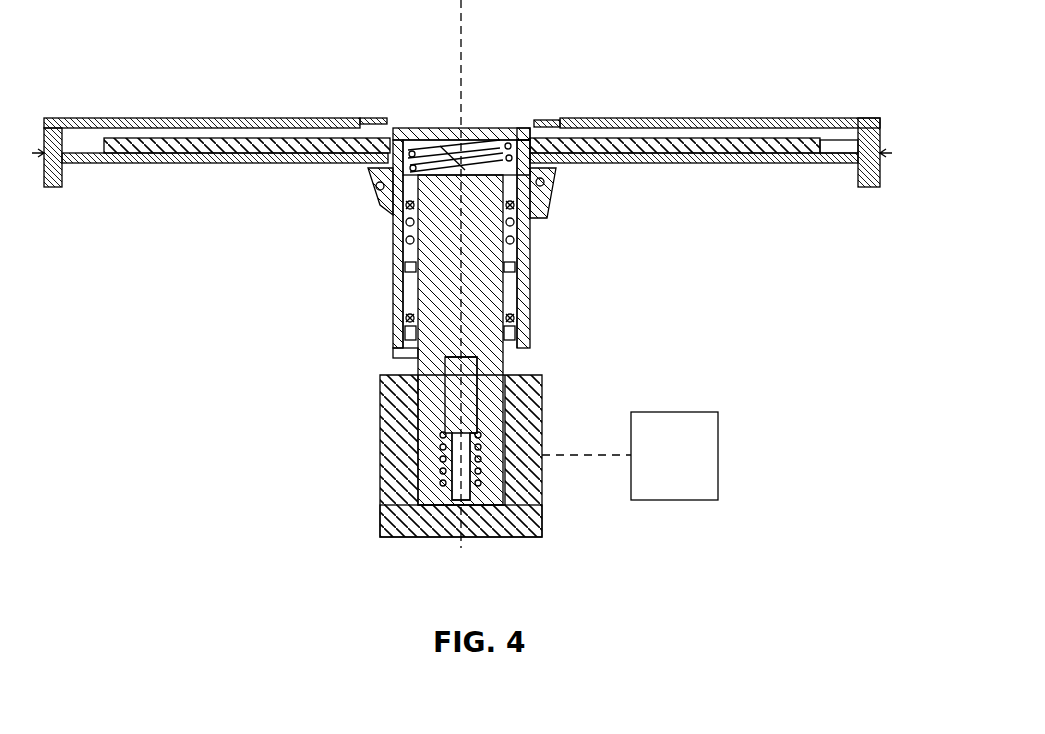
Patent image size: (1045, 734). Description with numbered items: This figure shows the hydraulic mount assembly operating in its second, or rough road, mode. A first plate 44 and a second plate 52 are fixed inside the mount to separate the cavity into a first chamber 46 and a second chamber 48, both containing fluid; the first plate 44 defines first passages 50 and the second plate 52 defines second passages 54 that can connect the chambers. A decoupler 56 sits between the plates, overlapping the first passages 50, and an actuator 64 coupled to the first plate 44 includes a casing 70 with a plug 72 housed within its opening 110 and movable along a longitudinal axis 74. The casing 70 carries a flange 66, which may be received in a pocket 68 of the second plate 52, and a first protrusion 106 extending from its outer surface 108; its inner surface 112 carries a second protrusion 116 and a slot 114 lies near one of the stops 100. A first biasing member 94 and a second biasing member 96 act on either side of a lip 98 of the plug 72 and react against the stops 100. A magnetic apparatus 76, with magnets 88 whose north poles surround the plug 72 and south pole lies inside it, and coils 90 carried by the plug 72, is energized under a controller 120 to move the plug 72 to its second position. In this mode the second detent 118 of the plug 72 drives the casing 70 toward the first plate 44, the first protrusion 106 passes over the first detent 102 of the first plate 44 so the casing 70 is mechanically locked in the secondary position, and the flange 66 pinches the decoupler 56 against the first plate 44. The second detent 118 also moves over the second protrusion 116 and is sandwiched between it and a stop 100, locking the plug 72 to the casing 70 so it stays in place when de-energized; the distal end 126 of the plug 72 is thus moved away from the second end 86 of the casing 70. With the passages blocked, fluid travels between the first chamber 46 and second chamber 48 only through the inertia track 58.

The first plate 44 is at (838, 165).
The first chamber 46 is at (246, 405).
The second chamber 48 is at (662, 57).
The first passages 50 is at (190, 165).
The second plate 52 is at (868, 118).
The second passages 54 is at (130, 122).
The decoupler 56 is at (245, 140).
The inertia track 58 is at (885, 160).
The actuator 64 is at (372, 485).
The flange 66 is at (382, 128).
The pocket 68 is at (540, 124).
The casing 70 is at (518, 262).
The plug 72 is at (505, 365).
The longitudinal axis 74 is at (472, 42).
The magnetic apparatus 76 is at (562, 562).
The second end 86 is at (522, 132).
The magnet 88 is at (412, 515).
The coils 90 is at (441, 437).
The first biasing member 94 is at (516, 230).
The second biasing member 96 is at (414, 142).
The lip 98 is at (404, 237).
The stops 100 is at (405, 268).
The first detent 102 is at (378, 178).
The first protrusion 106 is at (380, 200).
The outer surface 108 is at (396, 326).
The opening 110 is at (506, 150).
The inner surface 112 is at (548, 195).
The slot 114 is at (445, 147).
The second protrusion 116 is at (516, 310).
The second detent 118 is at (404, 318).
The controller 120 is at (655, 467).
The distal end 126 is at (470, 152).